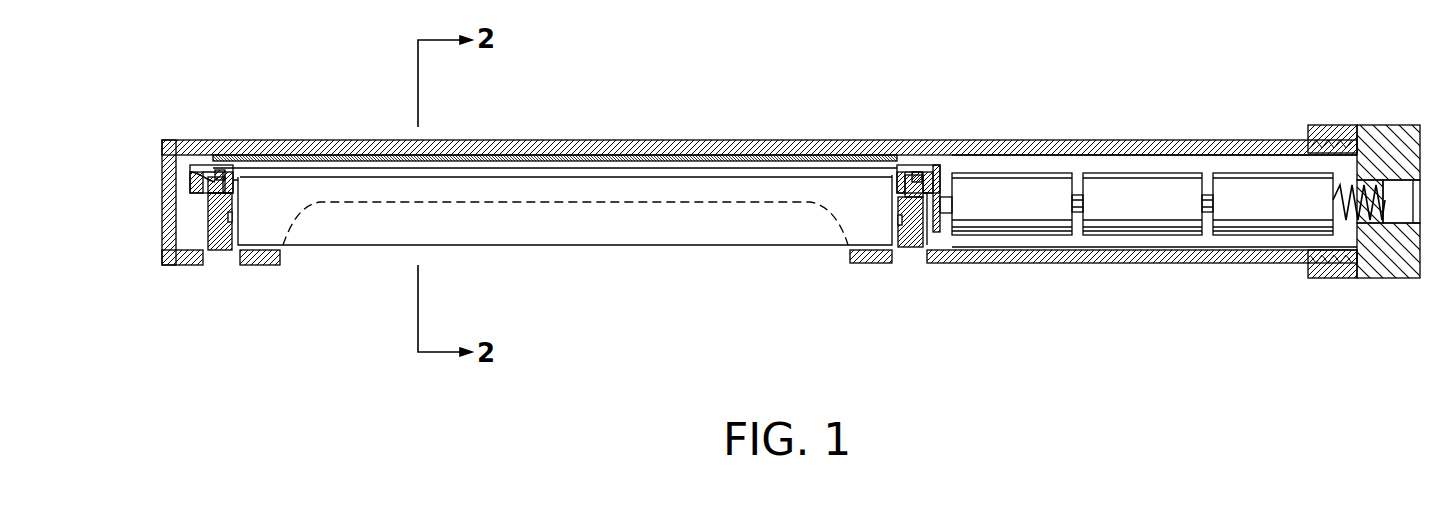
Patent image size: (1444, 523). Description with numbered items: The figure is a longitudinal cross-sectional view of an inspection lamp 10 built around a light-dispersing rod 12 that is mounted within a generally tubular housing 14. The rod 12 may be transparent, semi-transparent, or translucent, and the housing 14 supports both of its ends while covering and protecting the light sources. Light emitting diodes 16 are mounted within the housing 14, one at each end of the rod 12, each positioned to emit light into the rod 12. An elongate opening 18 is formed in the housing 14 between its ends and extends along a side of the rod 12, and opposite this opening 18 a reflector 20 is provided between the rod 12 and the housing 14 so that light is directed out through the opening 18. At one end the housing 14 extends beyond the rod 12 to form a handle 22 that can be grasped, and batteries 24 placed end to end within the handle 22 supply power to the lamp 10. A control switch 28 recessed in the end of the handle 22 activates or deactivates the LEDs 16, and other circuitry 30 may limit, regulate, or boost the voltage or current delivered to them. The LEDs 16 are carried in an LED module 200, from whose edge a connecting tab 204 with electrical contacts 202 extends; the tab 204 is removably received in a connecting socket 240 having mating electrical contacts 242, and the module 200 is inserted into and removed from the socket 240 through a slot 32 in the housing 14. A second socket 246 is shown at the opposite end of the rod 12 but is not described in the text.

The inspection lamp 10 is at (481, 112).
The light-dispersing rod 12 is at (543, 230).
The tubular housing 14 is at (163, 212).
The light emitting diode 16 is at (232, 222).
The elongate opening 18 is at (335, 230).
The reflector 20 is at (572, 153).
The handle 22 is at (1118, 257).
The batteries 24 is at (1255, 202).
The control switch 28 is at (1412, 202).
The circuitry 30 is at (982, 140).
The opening or slot 32 is at (222, 260).
The LED module 200 is at (236, 185).
The electrical contacts 202 is at (222, 171).
The connecting tab 204 is at (228, 175).
The connecting socket 240 is at (197, 167).
The mating electrical contacts 242 is at (188, 172).
The right socket 246 is at (902, 165).